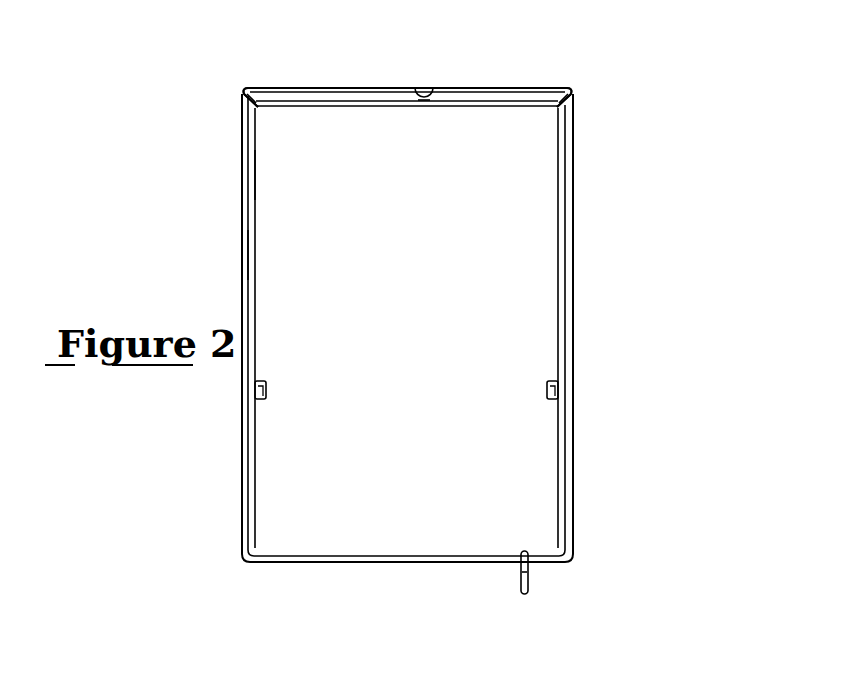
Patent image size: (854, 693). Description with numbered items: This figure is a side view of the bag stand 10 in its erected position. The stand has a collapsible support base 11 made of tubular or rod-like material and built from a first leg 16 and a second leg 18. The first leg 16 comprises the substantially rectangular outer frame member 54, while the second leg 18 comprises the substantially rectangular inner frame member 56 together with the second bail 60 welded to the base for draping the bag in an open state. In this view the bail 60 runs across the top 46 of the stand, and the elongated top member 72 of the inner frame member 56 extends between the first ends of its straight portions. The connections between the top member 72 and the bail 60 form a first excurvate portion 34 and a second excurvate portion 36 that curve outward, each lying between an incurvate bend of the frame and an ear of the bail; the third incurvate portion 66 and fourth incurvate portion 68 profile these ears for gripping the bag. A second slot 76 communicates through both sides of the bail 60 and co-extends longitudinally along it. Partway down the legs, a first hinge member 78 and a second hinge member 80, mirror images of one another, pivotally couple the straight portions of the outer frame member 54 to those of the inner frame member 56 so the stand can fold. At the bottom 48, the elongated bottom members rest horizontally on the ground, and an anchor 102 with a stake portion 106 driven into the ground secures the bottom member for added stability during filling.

The bag stand 10 is at (612, 72).
The support base 11 is at (222, 410).
The first leg 16 is at (587, 243).
The second leg 18 is at (260, 173).
The first excurvate portion 34 is at (237, 98).
The second excurvate portion 36 is at (577, 98).
The top 46 is at (373, 62).
The bottom 48 is at (338, 577).
The outer frame member 54 is at (232, 210).
The inner frame member 56 is at (258, 255).
The second bail 60 is at (478, 88).
The third incurvate portion 66 is at (240, 92).
The fourth incurvate portion 68 is at (568, 88).
The top member 72 is at (420, 100).
The second slot 76 is at (430, 90).
The first hinge member 78 is at (282, 385).
The second hinge member 80 is at (538, 392).
The anchor 102 is at (532, 590).
The stake portion 106 is at (528, 572).